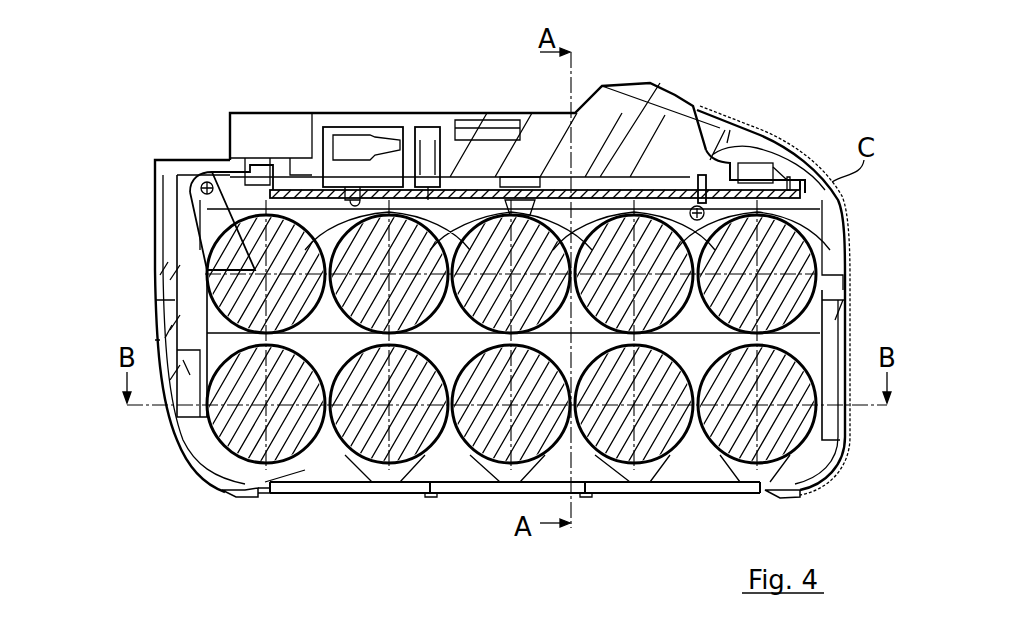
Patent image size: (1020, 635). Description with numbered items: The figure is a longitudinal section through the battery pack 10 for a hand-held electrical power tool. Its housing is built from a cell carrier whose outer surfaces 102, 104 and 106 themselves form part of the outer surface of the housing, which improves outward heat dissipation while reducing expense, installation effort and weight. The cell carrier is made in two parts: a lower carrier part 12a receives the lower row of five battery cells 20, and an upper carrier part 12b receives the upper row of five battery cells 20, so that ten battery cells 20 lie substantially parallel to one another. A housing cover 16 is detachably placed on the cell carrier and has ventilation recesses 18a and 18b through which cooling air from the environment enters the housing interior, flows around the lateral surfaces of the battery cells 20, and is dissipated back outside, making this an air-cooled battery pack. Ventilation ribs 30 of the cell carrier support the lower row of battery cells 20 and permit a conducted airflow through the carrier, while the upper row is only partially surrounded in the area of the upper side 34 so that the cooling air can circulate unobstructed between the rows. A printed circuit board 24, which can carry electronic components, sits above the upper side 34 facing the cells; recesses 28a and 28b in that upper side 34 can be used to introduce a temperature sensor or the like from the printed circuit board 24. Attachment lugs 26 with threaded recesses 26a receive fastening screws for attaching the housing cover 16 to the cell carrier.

The battery pack 10 is at (772, 126).
The lower carrier part 12a is at (163, 313).
The upper carrier part 12b is at (232, 253).
The housing cover 16 is at (677, 130).
The ventilation recess 18a is at (478, 116).
The ventilation recess 18b is at (262, 155).
The battery cell 20 is at (213, 232).
The printed circuit board 24 is at (343, 185).
The attachment lug 26 is at (222, 178).
The threaded recess 26a is at (205, 185).
The recess 28a is at (525, 195).
The recess 28b is at (425, 185).
The ventilation rib 30 is at (190, 377).
The upper side 34 is at (608, 185).
The outer surface 102 is at (153, 335).
The outer surface 104 is at (855, 318).
The outer surface 106 is at (390, 493).